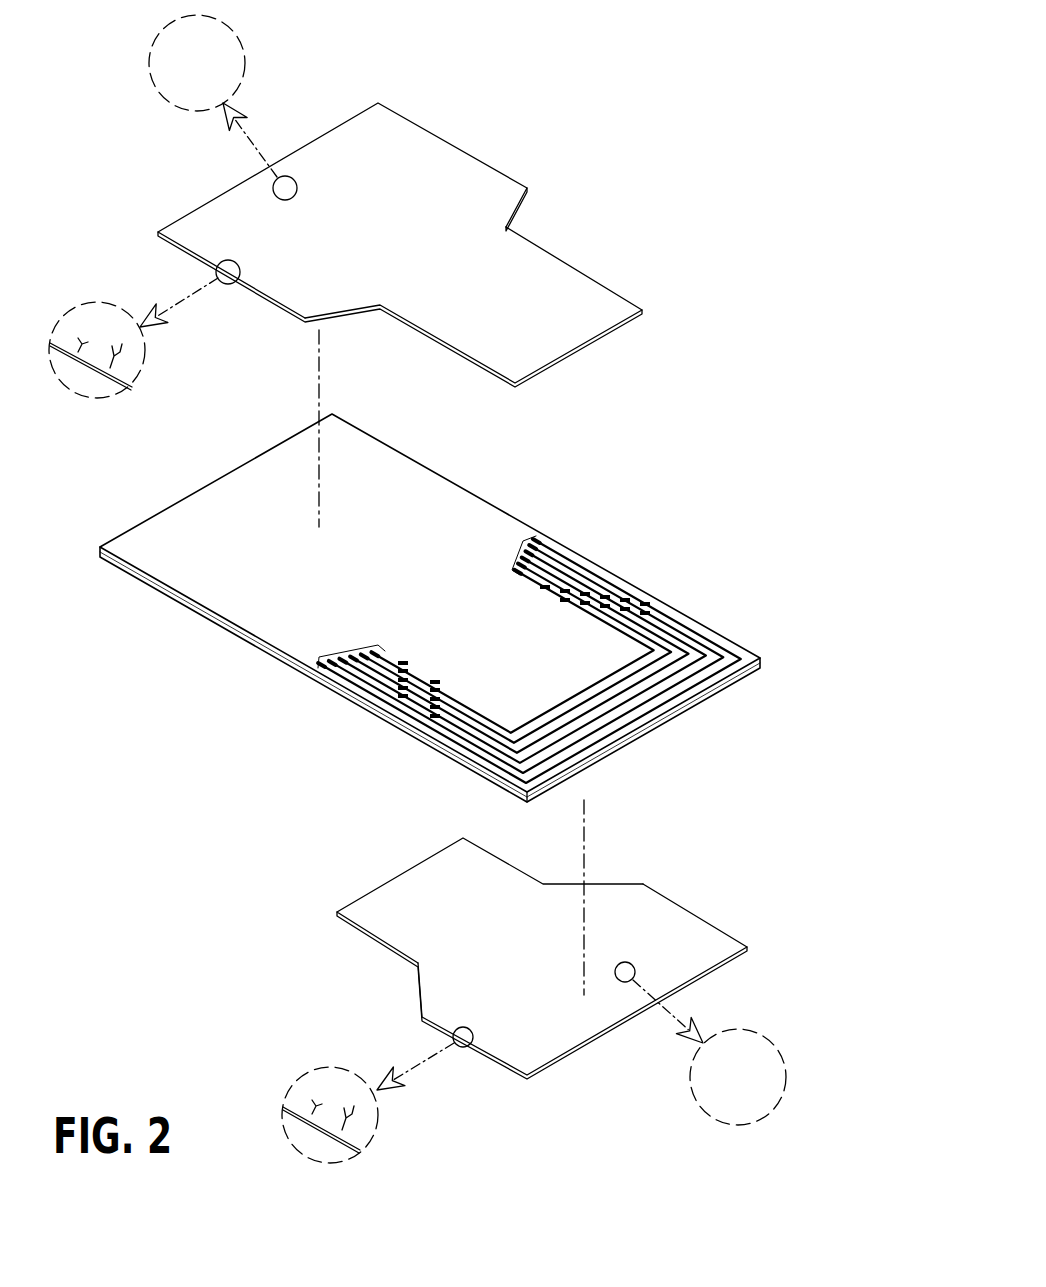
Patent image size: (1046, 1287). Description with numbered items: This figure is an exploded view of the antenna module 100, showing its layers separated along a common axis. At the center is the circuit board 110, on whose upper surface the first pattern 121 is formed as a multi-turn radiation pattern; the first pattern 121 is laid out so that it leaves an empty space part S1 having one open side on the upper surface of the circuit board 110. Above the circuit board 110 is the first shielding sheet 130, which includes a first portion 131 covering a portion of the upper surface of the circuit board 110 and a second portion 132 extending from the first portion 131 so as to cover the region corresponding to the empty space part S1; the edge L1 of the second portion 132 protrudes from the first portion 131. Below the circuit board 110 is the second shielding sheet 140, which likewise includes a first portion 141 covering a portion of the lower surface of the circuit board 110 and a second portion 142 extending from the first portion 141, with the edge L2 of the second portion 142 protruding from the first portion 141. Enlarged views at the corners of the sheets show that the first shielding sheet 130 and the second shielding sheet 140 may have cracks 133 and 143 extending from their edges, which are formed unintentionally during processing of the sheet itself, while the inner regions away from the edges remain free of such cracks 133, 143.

The antenna module 100 is at (432, 31).
The circuit board 110 is at (748, 627).
The first pattern 121 is at (657, 620).
The empty space part S1 is at (480, 646).
The first shielding sheet 130 is at (637, 147).
The first portion 131 is at (440, 170).
The second portion 132 is at (537, 280).
The crack 133 is at (117, 360).
The edge L1 is at (597, 340).
The second shielding sheet 140 is at (741, 852).
The first portion 141 is at (652, 923).
The second portion 142 is at (485, 872).
The crack 143 is at (348, 1122).
The edge L2 is at (375, 880).